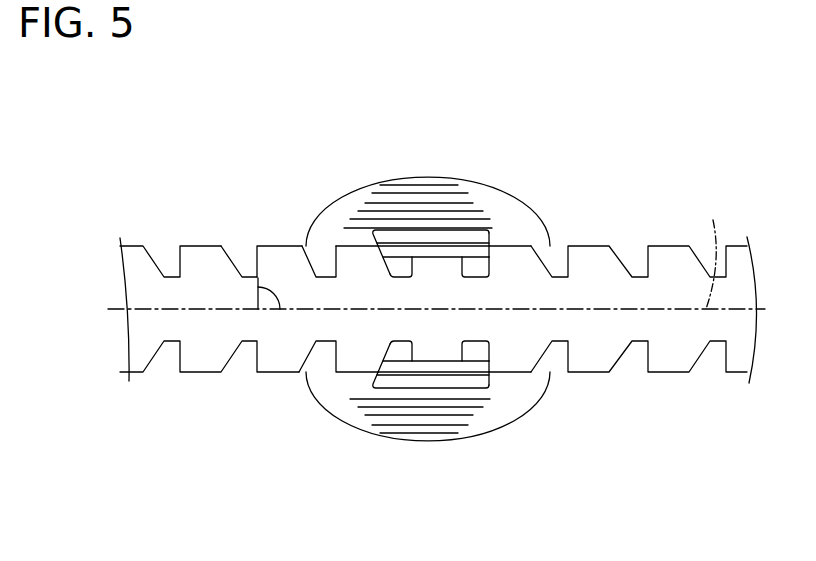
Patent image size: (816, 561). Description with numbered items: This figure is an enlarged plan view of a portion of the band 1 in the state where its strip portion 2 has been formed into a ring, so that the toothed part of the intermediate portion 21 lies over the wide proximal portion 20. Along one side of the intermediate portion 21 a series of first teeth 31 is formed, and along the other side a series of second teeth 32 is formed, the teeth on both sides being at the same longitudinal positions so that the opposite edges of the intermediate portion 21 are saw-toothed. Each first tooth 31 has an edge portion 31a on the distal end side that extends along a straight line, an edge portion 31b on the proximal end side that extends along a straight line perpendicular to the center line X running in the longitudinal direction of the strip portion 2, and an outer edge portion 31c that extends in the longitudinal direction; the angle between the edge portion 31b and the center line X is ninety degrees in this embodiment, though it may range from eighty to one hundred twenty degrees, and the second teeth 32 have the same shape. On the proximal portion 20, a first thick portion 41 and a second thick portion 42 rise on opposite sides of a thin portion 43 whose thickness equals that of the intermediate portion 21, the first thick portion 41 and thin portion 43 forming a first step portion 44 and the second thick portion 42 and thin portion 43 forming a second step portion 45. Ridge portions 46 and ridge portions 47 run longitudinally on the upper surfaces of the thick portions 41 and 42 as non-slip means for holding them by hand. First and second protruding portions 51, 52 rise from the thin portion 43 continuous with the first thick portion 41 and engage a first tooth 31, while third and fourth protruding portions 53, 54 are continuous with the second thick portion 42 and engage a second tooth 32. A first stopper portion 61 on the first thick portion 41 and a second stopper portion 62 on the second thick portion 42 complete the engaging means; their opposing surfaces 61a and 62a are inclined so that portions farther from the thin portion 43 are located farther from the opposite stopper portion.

The band 1 is at (436, 243).
The strip portion 2 is at (642, 236).
The proximal portion 20 is at (428, 296).
The intermediate portion 21 is at (194, 243).
The first tooth 31 is at (314, 191).
The edge portion 31a is at (326, 262).
The edge portion 31b is at (244, 250).
The outer edge portion 31c is at (276, 246).
The second tooth 32 is at (273, 373).
The first thick portion 41 is at (428, 180).
The second thick portion 42 is at (428, 440).
The thin portion 43 is at (320, 357).
The first step portion 44 is at (505, 247).
The second step portion 45 is at (505, 371).
The ridge portion 46 is at (423, 205).
The ridge portion 47 is at (453, 417).
The first protruding portion 51 is at (405, 263).
The second protruding portion 52 is at (485, 263).
The third protruding portion 53 is at (405, 355).
The fourth protruding portion 54 is at (485, 355).
The first stopper portion 61 is at (466, 222).
The opposing surface 61a is at (491, 250).
The second stopper portion 62 is at (463, 401).
The opposing surface 62a is at (491, 368).
The center line X is at (711, 249).